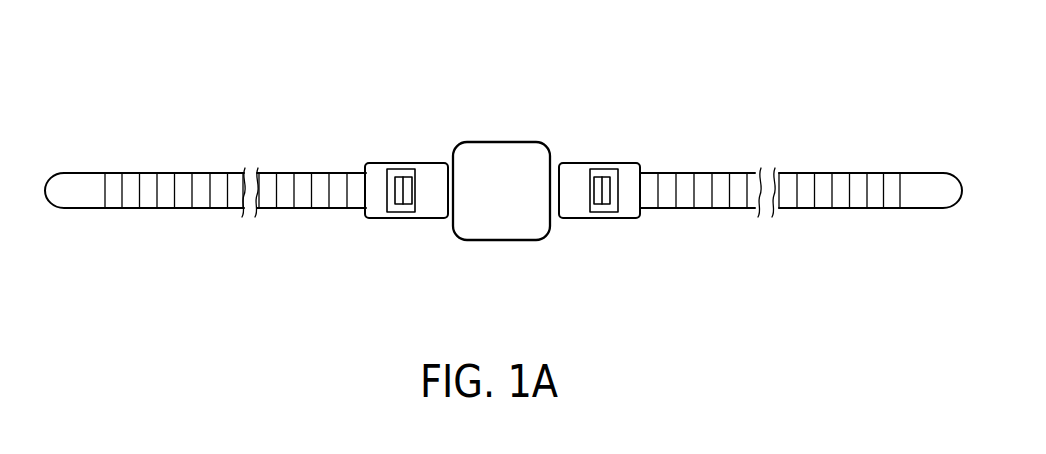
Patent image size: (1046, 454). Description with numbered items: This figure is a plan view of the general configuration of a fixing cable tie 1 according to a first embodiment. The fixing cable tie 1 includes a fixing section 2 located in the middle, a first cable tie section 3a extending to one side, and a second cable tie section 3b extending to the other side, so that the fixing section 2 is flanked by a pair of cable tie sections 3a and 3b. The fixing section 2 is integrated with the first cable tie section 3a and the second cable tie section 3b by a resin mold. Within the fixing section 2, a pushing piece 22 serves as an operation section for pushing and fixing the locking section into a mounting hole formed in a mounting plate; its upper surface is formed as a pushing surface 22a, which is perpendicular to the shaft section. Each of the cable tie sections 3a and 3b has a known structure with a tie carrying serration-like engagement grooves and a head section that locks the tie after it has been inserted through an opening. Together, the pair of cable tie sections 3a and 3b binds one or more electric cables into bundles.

The fixing cable tie 1 is at (678, 58).
The fixing section 2 is at (517, 93).
The pushing piece 22 is at (480, 242).
The pushing surface 22a is at (498, 155).
The first cable tie section 3a is at (757, 105).
The second cable tie section 3b is at (277, 105).